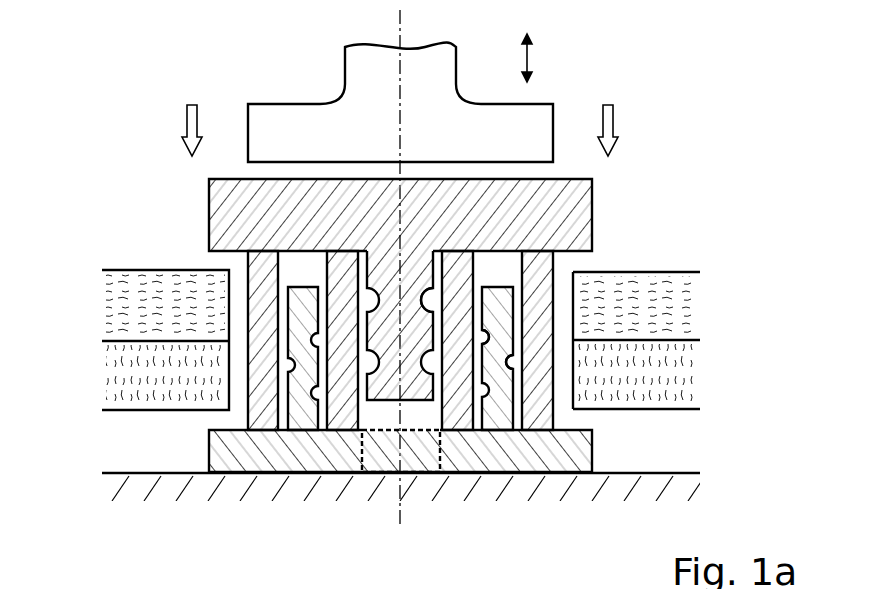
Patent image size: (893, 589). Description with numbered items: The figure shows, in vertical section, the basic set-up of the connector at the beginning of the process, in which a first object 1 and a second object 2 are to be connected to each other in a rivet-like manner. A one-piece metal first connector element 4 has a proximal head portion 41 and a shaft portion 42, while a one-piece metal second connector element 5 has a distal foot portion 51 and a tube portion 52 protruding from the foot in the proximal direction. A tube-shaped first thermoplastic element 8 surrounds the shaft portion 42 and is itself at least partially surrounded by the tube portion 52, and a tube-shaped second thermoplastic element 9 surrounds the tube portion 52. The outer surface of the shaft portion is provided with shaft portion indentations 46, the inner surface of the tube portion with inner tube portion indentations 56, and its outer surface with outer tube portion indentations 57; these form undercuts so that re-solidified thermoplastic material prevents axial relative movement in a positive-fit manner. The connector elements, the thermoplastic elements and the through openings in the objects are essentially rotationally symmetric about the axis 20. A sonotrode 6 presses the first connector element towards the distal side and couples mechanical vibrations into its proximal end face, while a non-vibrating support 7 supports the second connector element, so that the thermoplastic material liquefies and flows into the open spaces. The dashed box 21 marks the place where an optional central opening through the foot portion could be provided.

The first object 1 is at (645, 308).
The second object 2 is at (137, 380).
The first connector element 4 is at (593, 200).
The second connector element 5 is at (455, 455).
The sonotrode 6 is at (507, 130).
The non-vibrating support 7 is at (168, 487).
The first thermoplastic element 8 is at (345, 272).
The second thermoplastic element 9 is at (265, 278).
The axis 20 is at (400, 162).
The dashed box 21 is at (392, 478).
The proximal head portion 41 is at (255, 200).
The shaft portion 42 is at (392, 318).
The shaft portion indentations 46 is at (428, 300).
The distal foot portion 51 is at (242, 445).
The tube portion 52 is at (503, 403).
The inner tube portion indentations 56 is at (482, 337).
The outer tube portion indentations 57 is at (510, 363).